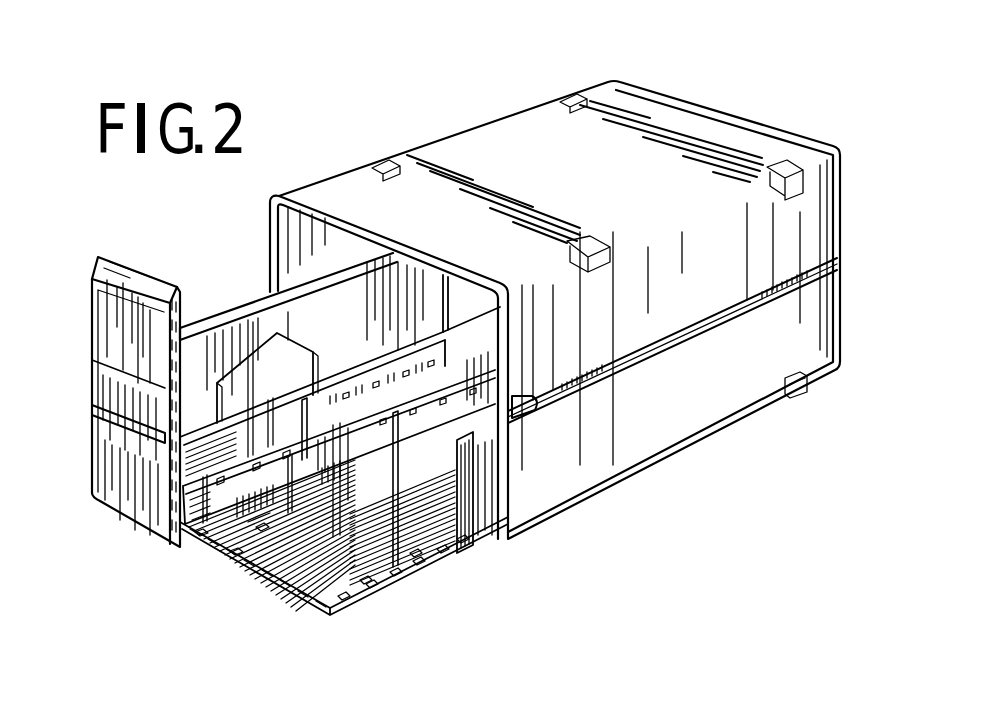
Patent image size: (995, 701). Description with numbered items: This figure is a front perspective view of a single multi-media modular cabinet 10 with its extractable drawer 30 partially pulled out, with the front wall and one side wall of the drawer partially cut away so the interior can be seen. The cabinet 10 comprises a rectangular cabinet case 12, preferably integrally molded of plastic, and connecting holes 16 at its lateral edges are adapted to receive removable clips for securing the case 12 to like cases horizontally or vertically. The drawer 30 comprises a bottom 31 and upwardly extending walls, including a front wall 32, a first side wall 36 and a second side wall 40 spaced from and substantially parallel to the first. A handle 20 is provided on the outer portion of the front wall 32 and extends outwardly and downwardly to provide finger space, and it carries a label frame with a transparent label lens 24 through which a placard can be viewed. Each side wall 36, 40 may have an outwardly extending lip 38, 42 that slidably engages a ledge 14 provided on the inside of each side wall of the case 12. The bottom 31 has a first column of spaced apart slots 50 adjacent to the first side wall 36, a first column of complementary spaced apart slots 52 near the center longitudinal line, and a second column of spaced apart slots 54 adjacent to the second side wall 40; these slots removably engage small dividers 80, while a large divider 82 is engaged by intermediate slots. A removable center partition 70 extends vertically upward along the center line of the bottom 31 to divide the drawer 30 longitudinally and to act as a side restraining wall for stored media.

The multi-media modular cabinet 10 is at (397, 108).
The cabinet case 12 is at (497, 140).
The ledge 14 is at (818, 276).
The connecting hole 16 is at (570, 98).
The handle 20 is at (113, 303).
The label lens 24 is at (110, 401).
The extractable drawer 30 is at (198, 256).
The bottom 31 is at (310, 592).
The front wall 32 is at (120, 483).
The first side wall 36 is at (475, 530).
The lip 38 is at (503, 397).
The second side wall 40 is at (356, 314).
The lip 42 is at (248, 300).
The first column of spaced apart slots 50 is at (420, 543).
The first column of complementary spaced apart slots 52 is at (256, 526).
The second column of spaced apart slots 54 is at (362, 378).
The center partition 70 is at (200, 528).
The small divider 80 is at (298, 382).
The large divider 82 is at (502, 356).